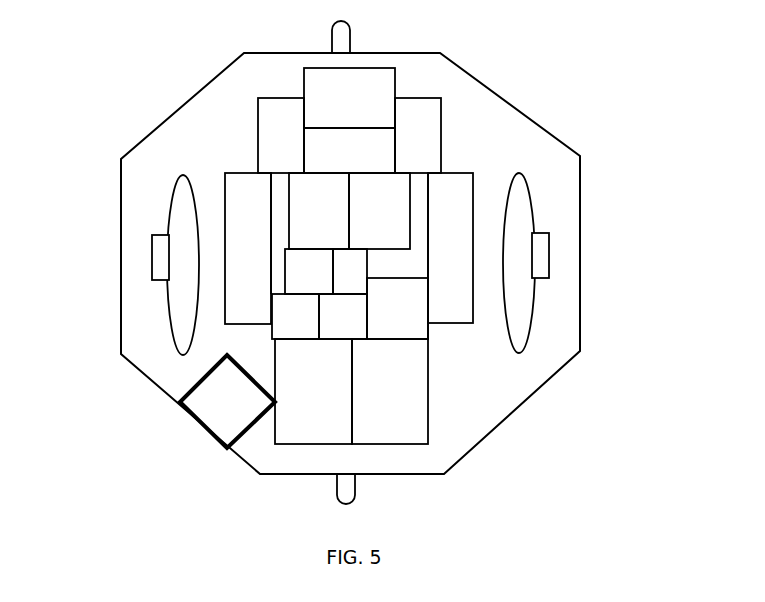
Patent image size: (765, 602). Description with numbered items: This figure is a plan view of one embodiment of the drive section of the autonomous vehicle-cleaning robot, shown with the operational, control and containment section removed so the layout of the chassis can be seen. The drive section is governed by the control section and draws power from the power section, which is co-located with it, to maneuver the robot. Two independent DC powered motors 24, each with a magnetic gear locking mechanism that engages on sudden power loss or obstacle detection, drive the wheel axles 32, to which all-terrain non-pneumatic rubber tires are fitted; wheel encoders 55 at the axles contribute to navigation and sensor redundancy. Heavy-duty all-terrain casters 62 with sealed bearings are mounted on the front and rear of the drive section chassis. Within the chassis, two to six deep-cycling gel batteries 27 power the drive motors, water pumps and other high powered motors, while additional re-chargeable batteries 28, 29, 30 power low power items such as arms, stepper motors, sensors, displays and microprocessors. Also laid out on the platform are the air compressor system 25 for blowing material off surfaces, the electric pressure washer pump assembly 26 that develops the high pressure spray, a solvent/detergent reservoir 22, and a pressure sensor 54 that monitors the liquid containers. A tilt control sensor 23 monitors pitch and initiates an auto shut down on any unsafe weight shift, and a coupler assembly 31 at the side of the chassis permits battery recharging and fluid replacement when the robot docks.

The solvent/detergent reservoir 22 is at (285, 326).
The tilt control sensor 23 is at (337, 282).
The independent DC powered motors 24 is at (238, 236).
The air compressor system 25 is at (332, 103).
The electric pressure washer pump assembly 26 is at (328, 162).
The deep-cycling gel batteries 27 is at (305, 420).
The re-chargeable batteries 28 is at (306, 241).
The re-chargeable batteries 29 is at (380, 312).
The re-chargeable batteries 30 is at (271, 147).
The coupler assembly 31 is at (210, 412).
The wheel axle 32 is at (170, 266).
The pressure sensor 54 is at (290, 284).
The wheel encoders 55 is at (136, 249).
The heavy-duty all-terrain casters 62 is at (300, 37).